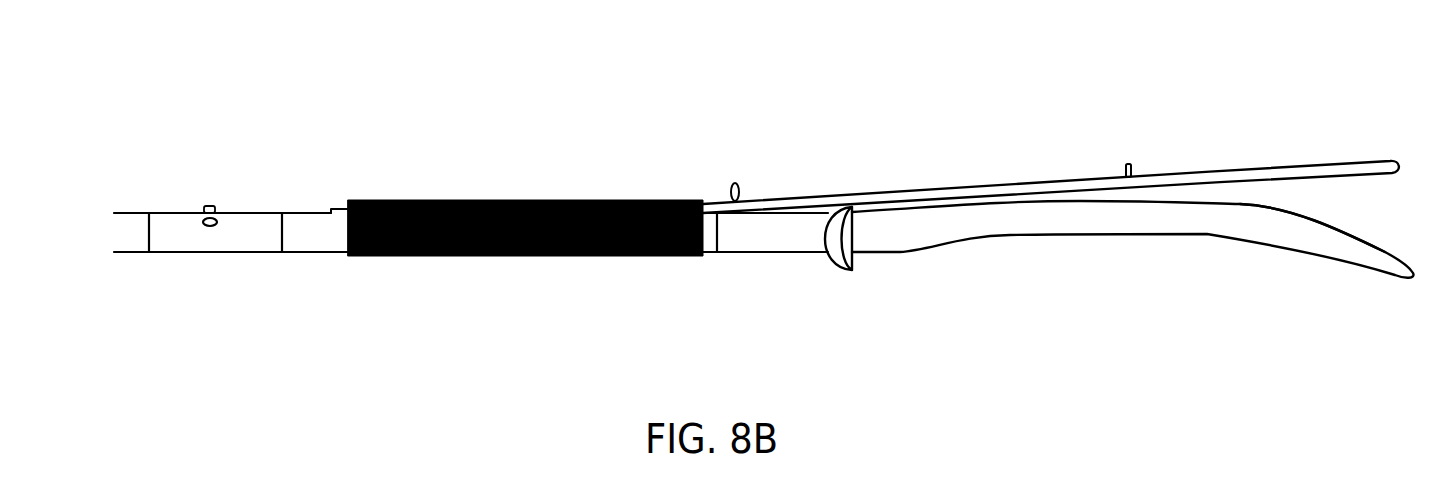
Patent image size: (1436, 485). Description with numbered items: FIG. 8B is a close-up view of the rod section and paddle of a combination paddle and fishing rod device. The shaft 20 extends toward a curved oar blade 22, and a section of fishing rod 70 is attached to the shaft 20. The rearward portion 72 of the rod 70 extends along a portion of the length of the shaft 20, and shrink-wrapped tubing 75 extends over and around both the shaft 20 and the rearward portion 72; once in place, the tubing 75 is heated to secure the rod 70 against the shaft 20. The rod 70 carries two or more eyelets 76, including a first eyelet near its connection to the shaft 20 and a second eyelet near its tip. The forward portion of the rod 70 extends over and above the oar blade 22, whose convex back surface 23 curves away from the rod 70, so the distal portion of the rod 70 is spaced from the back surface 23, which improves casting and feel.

The shaft 20 is at (310, 248).
The oar blade 22 is at (1052, 218).
The back surface 23 is at (1245, 204).
The fishing rod 70 is at (888, 192).
The rearward portion 72 is at (347, 209).
The shrink-wrapped tubing 75 is at (465, 198).
The eyelets 76 is at (735, 183).